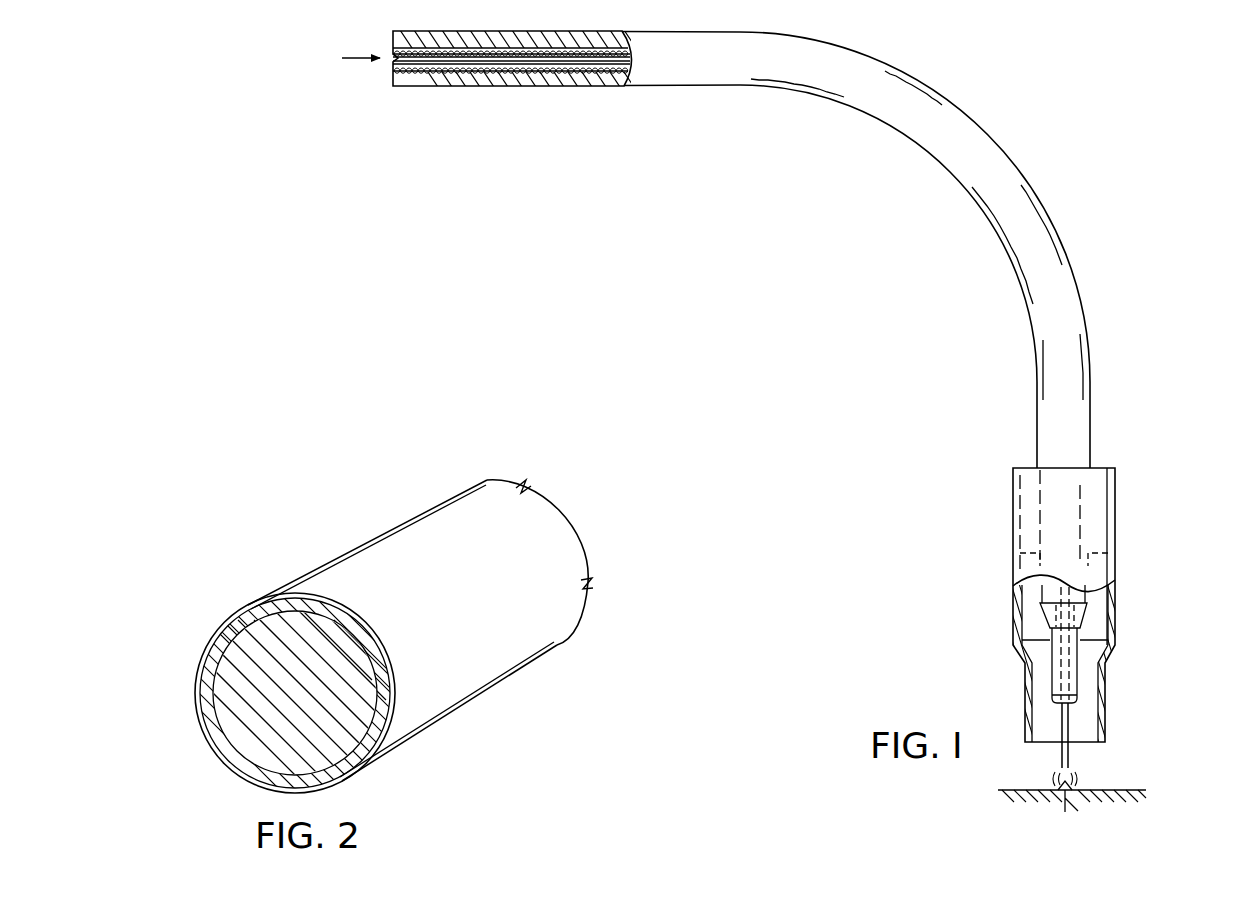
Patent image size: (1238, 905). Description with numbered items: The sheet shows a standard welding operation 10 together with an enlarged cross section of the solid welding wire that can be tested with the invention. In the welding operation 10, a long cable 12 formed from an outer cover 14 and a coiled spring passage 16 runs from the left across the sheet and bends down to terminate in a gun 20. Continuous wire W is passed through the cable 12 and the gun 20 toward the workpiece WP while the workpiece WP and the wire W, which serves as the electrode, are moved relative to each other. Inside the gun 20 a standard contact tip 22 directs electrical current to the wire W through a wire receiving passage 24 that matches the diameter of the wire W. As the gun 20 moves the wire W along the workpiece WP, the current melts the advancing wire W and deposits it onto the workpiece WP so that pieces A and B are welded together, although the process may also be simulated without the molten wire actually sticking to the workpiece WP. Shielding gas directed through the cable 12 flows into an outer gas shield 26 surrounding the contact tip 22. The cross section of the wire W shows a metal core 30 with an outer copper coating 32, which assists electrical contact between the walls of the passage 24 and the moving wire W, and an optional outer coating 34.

In FIG. 1, the welding operation 10 is at (1150, 427).
In FIG. 1, the cable 12 is at (1012, 278).
In FIG. 1, the outer cover 14 is at (547, 80).
In FIG. 1, the coiled spring passage 16 is at (607, 73).
In FIG. 1, the gun 20 is at (1122, 637).
In FIG. 1, the contact tip 22 is at (1078, 688).
In FIG. 1, the wire receiving passage 24 is at (1063, 672).
In FIG. 1, the outer gas shield 26 is at (1020, 600).
In FIG. 2, the metal core 30 is at (233, 691).
In FIG. 2, the outer copper coating 32 is at (207, 668).
In FIG. 2, the optional outer coating 34 is at (237, 612).
In FIG. 1, the wire W is at (1070, 730).
In FIG. 2, the wire W is at (482, 702).
In FIG. 1, the workpiece WP is at (1127, 788).
In FIG. 1, the piece A is at (1023, 793).
In FIG. 1, the piece B is at (1095, 793).